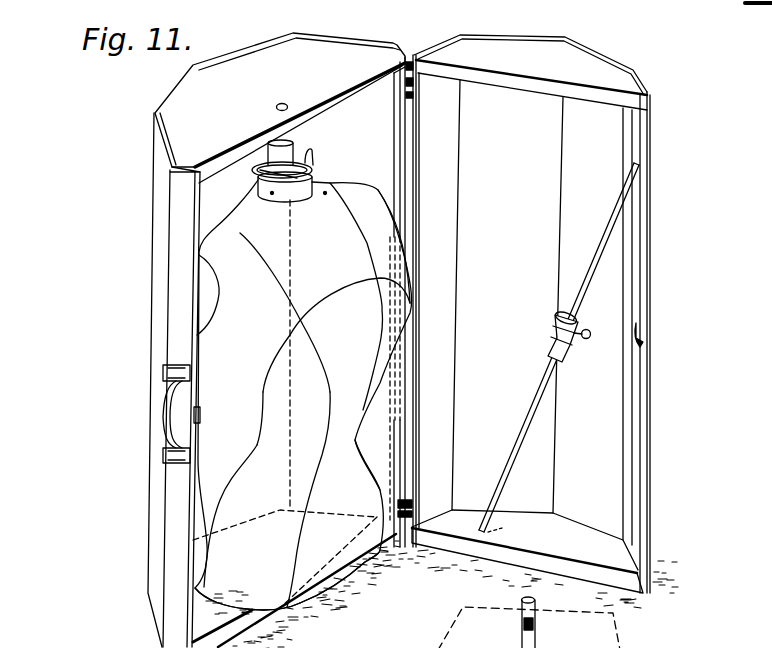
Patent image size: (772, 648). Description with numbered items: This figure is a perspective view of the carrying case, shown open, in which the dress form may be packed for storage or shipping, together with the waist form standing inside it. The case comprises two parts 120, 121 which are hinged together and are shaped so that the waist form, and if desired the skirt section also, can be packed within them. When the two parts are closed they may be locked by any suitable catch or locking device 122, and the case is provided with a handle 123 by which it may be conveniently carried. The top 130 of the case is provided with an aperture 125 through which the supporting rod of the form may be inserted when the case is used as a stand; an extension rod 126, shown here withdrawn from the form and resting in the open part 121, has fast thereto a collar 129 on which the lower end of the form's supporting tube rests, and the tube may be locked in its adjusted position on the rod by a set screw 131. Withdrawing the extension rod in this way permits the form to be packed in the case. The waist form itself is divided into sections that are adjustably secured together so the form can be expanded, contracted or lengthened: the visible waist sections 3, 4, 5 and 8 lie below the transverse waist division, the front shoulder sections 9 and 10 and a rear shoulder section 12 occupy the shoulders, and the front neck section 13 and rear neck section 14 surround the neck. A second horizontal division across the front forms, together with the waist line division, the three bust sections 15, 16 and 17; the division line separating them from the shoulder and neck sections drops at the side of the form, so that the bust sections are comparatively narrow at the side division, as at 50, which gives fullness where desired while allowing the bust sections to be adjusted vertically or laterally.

The waist section 3 is at (247, 574).
The waist section 4 is at (340, 564).
The waist section 5 is at (368, 470).
The waist section 8 is at (230, 516).
The front shoulder section 9 is at (221, 295).
The front shoulder section 10 is at (357, 195).
The rear shoulder section 12 is at (213, 230).
The front neck section 13 is at (285, 312).
The rear neck section 14 is at (245, 202).
The bust section 15 is at (293, 499).
The bust section 16 is at (336, 335).
The bust section 17 is at (388, 316).
The narrow point of bust sections 50 is at (253, 436).
The carrying case part 120 is at (190, 103).
The carrying case part 121 is at (600, 130).
The catch or locking device 122 is at (645, 342).
The handle 123 is at (163, 413).
The aperture 125 is at (285, 104).
The extension rod 126 is at (536, 408).
The collar 129 is at (563, 353).
The top of the case 130 is at (361, 106).
The set screw 131 is at (590, 332).